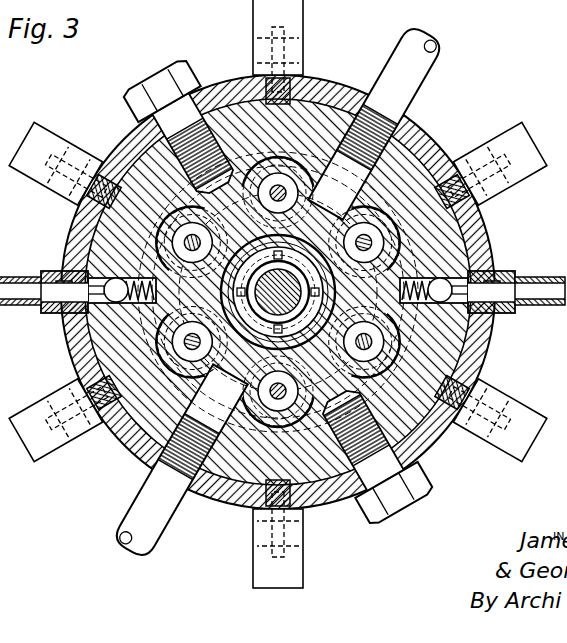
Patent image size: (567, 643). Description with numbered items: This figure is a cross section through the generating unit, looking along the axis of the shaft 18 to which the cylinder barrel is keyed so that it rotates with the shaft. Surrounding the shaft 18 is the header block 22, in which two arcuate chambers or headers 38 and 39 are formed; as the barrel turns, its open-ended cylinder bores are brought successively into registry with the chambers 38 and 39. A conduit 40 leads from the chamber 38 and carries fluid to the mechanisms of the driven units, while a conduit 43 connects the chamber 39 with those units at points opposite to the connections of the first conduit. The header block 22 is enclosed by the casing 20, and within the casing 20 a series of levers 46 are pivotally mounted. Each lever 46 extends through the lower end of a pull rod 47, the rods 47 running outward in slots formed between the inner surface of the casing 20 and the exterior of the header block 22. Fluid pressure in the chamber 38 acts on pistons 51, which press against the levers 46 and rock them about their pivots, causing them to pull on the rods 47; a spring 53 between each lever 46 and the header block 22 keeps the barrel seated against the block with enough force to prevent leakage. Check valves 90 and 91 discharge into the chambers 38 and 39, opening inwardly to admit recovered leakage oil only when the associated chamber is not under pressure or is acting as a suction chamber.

The shaft 18 is at (338, 281).
The casing 20 is at (327, 94).
The header block 22 is at (334, 115).
The arcuate chamber 38 is at (318, 197).
The arcuate chamber 39 is at (236, 382).
The conduit 40 is at (408, 55).
The conduit 43 is at (165, 513).
The lever 46 is at (287, 50).
The pull rod 47 is at (262, 84).
The piston 51 is at (372, 257).
The spring 53 is at (395, 238).
The check valve 90 is at (482, 313).
The check valve 91 is at (72, 320).